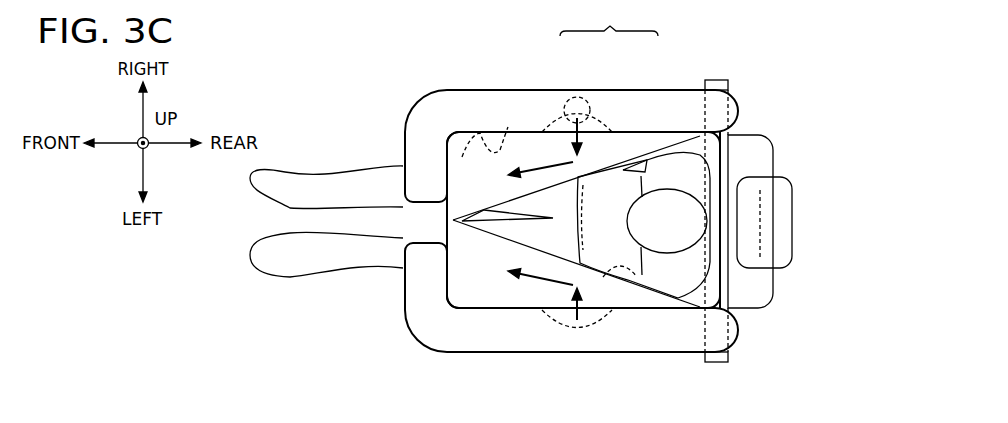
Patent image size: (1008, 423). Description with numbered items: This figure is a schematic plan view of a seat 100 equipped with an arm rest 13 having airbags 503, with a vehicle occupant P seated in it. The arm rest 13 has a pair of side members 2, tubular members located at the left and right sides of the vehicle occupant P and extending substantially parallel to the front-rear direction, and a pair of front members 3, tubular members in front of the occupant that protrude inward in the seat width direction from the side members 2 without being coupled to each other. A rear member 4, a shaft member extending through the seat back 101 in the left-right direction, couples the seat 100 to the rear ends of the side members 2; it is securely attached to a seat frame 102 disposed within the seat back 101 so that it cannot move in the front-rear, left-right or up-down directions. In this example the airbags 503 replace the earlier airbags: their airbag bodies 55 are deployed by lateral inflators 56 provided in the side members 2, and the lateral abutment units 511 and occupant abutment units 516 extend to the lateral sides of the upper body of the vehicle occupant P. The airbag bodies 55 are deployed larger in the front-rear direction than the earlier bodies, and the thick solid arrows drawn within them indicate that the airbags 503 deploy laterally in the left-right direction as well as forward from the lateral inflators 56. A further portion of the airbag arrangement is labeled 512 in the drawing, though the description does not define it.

The arm rest 13 is at (416, 84).
The side members 2 is at (683, 100).
The front members 3 is at (403, 298).
The rear member 4 is at (740, 100).
The shoulder belt portion 512 is at (462, 157).
The lateral abutment units 511 is at (508, 127).
The airbags 503 is at (609, 21).
The lateral inflators 56 is at (580, 97).
The airbag bodies 55 is at (630, 143).
The occupant abutment units 516 is at (636, 272).
The seat back 101 is at (765, 157).
The seat 100 is at (812, 222).
The seat frame 102 is at (700, 320).
The vehicle occupant P is at (289, 262).